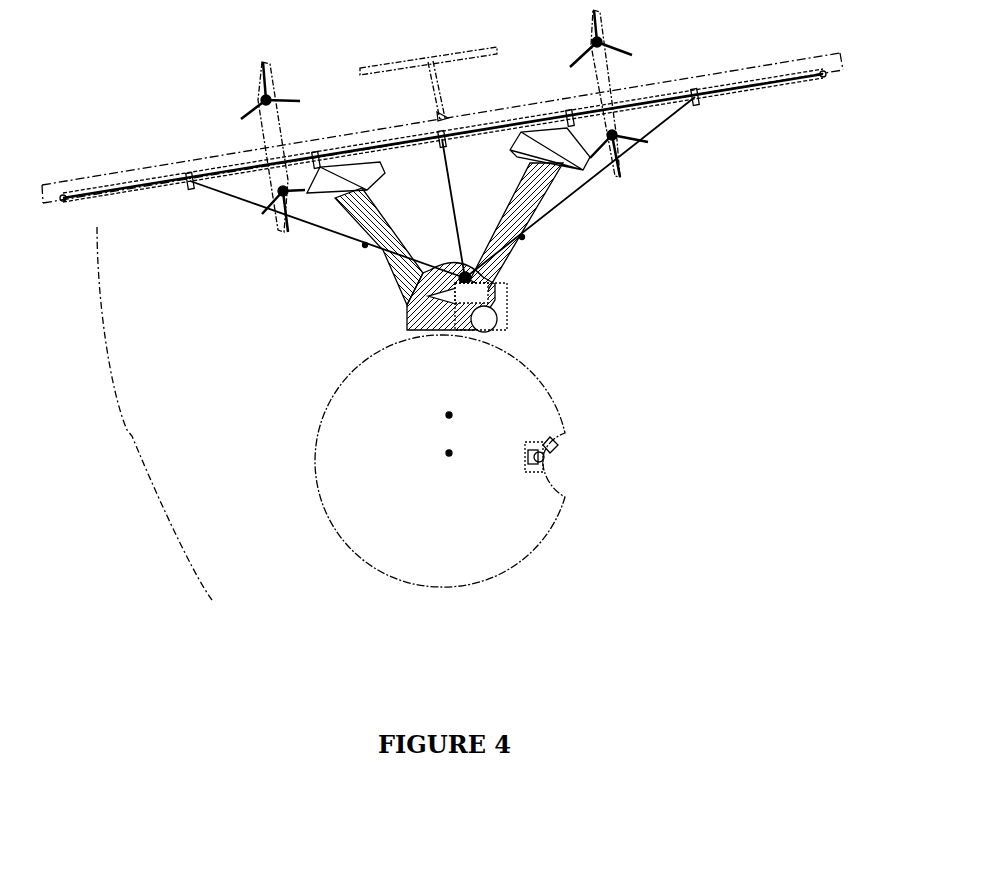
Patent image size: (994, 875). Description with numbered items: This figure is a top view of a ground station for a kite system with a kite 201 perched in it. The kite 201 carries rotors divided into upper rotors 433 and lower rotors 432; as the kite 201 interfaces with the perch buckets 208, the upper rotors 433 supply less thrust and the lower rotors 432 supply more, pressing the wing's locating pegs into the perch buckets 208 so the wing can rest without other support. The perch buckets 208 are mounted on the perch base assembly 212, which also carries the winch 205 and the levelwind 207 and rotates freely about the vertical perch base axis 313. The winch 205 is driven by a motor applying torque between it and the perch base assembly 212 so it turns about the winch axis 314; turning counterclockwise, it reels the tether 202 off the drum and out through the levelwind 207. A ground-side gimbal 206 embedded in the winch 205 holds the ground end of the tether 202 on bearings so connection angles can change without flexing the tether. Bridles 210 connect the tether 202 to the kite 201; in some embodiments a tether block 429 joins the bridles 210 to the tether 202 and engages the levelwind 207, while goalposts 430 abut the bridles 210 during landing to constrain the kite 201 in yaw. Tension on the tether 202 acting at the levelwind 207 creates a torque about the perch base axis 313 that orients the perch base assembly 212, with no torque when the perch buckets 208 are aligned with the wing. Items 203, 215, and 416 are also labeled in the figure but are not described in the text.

The kite 201 is at (533, 110).
The tether 202 is at (154, 413).
The aft section / fin 203 is at (560, 437).
The winch 205 is at (350, 417).
The ground-side gimbal 206 is at (548, 455).
The levelwind 207 is at (490, 299).
The perch buckets 208 is at (348, 168).
The bridles 210 is at (447, 194).
The perch base assembly 212 is at (400, 303).
The bearing 215 is at (497, 326).
The perch base axis 313 is at (446, 420).
The winch axis 314 is at (446, 457).
The pivot housing 416 is at (510, 292).
The tether block 429 is at (500, 278).
The goalposts 430 is at (363, 246).
The lower rotors 432 is at (277, 197).
The upper rotors 433 is at (261, 100).